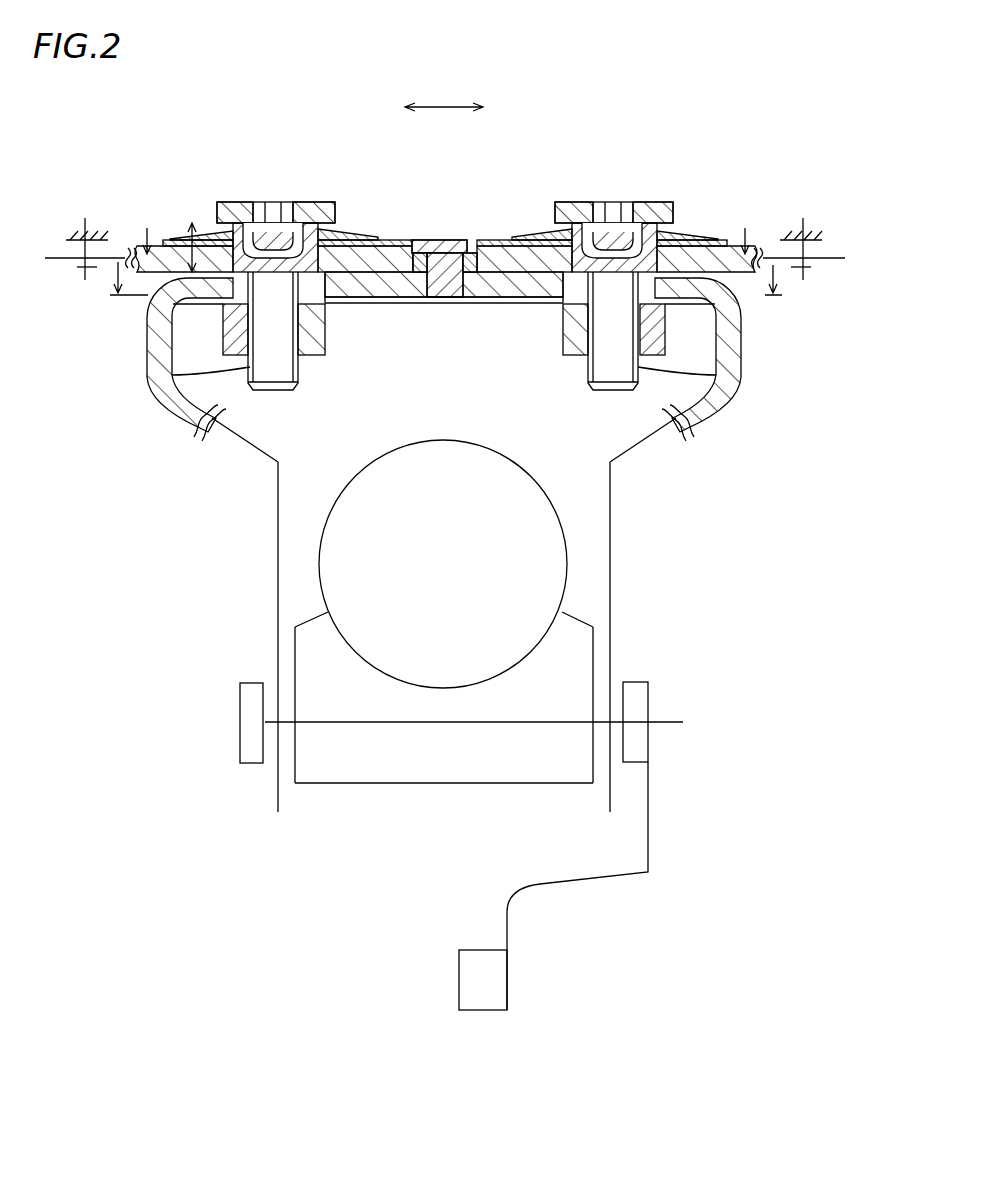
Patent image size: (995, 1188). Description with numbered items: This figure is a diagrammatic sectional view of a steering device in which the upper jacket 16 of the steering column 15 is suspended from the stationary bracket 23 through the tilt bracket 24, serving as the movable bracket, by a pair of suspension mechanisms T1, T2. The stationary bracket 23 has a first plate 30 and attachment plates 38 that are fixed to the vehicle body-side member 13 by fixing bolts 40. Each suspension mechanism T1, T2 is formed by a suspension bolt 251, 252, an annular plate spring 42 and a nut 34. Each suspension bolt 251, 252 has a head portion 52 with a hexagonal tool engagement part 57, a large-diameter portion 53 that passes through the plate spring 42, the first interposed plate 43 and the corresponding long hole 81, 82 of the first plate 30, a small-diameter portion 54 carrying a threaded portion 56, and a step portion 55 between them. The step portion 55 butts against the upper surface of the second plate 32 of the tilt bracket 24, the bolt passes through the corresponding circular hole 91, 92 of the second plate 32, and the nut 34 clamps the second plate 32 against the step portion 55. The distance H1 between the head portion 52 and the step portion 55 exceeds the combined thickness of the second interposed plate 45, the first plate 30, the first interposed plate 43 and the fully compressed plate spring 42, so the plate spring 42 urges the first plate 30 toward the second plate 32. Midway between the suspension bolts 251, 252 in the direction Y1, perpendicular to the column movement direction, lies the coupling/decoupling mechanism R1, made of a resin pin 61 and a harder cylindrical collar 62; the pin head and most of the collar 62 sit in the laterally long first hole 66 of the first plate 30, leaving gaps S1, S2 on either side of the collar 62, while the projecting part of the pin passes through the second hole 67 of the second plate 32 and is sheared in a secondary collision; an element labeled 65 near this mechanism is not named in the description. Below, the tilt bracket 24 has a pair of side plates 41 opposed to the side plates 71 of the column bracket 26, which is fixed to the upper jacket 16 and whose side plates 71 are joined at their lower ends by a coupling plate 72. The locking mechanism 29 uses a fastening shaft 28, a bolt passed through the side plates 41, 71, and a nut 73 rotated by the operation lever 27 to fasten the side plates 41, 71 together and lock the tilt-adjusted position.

The vehicle body-side member 13 is at (95, 233).
The attachment plates 38 is at (60, 254).
The fixing bolts 40 is at (80, 270).
The plate spring 42 is at (343, 240).
The stationary bracket 23 is at (493, 240).
The first interposed plate 43 is at (410, 240).
The first plate 30 is at (521, 234).
The head portion 52 is at (220, 215).
The long hole 81 is at (357, 237).
The long hole 82 is at (542, 240).
The tool engagement part 57 is at (280, 213).
The suspension bolt 251 is at (234, 188).
The suspension bolt 252 is at (664, 188).
The suspension mechanism T1 is at (314, 187).
The suspension mechanism T2 is at (580, 186).
The large-diameter portion 53 is at (243, 240).
The distance H1 is at (190, 223).
The circular hole 91 is at (263, 330).
The circular hole 92 is at (592, 303).
The first hole 66 is at (397, 273).
The second hole 67 is at (427, 303).
The boss 65 is at (450, 247).
The resin pin 61 is at (452, 308).
The collar 62 is at (487, 257).
The coupling/decoupling mechanism R1 is at (527, 367).
The second plate 32 is at (357, 287).
The second interposed plate 45 is at (380, 273).
The step portion 55 is at (183, 313).
The threaded portion 56 is at (173, 388).
The small-diameter portion 54 is at (263, 330).
The nut 34 is at (313, 357).
The tilt bracket 24 is at (268, 597).
The side plates 41 is at (278, 530).
The steering column 15 is at (351, 464).
The upper jacket 16 is at (532, 470).
The side plates 71 is at (295, 692).
The coupling plate 72 is at (470, 783).
The column bracket 26 is at (392, 793).
The fastening shaft 28 is at (248, 743).
The nut 73 is at (640, 697).
The locking mechanism 29 is at (687, 792).
The operation lever 27 is at (500, 985).
The direction Y1 is at (447, 107).
The gap S1 is at (415, 240).
The gap S2 is at (480, 240).